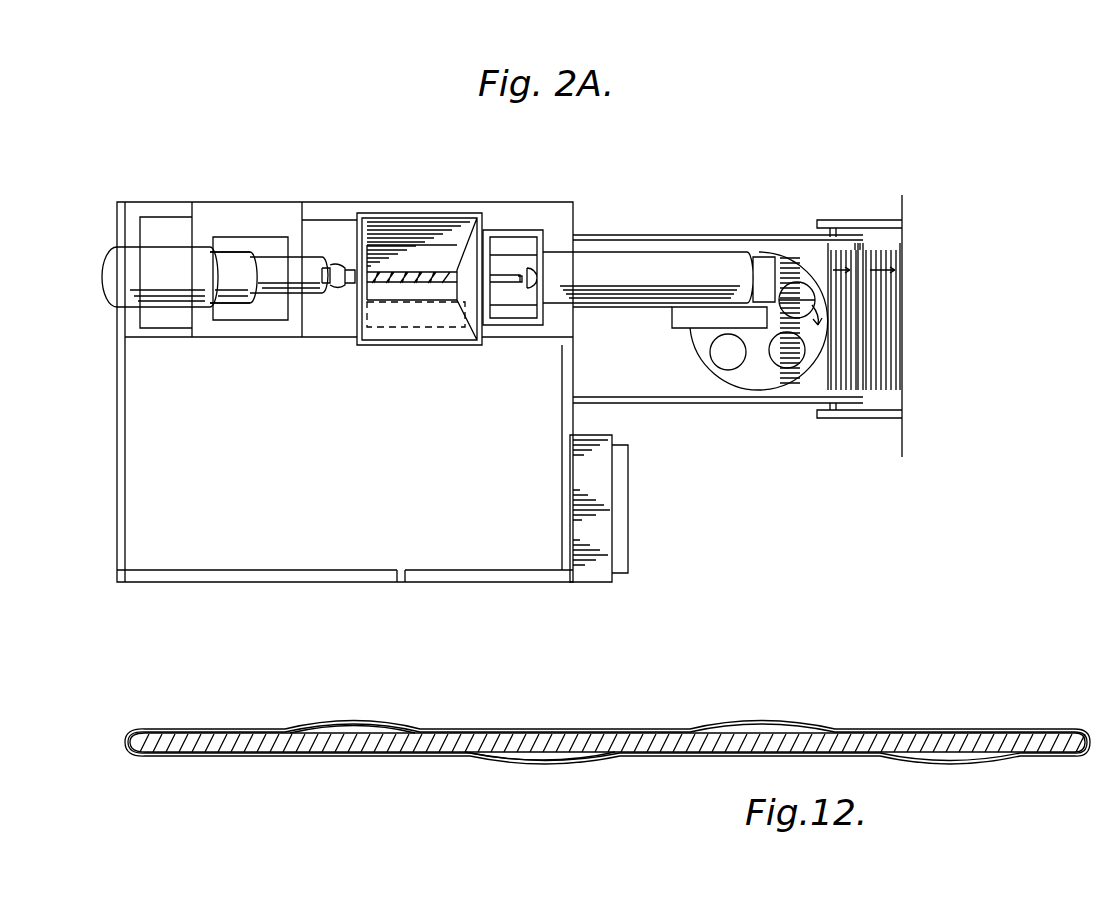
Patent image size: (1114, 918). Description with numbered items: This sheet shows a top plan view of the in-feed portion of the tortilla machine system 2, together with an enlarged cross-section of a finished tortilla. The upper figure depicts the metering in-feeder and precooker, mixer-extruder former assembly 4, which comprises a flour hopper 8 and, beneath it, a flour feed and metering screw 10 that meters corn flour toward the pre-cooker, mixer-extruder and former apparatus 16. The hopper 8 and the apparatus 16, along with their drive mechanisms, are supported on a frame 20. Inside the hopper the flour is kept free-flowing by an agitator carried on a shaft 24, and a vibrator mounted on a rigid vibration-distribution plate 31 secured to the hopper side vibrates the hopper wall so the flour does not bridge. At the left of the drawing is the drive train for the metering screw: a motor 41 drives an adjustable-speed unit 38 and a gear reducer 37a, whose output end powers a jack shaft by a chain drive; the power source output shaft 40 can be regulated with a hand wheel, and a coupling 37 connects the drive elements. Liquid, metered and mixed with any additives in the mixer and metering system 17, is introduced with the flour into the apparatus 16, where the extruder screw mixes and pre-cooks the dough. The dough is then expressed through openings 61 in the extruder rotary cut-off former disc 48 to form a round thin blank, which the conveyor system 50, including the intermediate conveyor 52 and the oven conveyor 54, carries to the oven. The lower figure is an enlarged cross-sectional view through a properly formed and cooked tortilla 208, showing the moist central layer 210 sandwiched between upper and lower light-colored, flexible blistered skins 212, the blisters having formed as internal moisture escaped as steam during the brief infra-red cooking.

In FIG. 2A, the tortilla machine system 2 is at (836, 105).
In FIG. 2A, the mixer-extruder former assembly 4 is at (372, 485).
In FIG. 2A, the flour hopper 8 is at (408, 220).
In FIG. 2A, the flour feed and metering screw 10 is at (420, 284).
In FIG. 2A, the pre-cooker, mixer-extruder and former apparatus 16 is at (618, 275).
In FIG. 2A, the mixer and metering system 17 is at (605, 540).
In FIG. 2A, the frame 20 is at (585, 432).
In FIG. 2A, the agitator shaft 24 is at (512, 262).
In FIG. 2A, the vibration-distribution plate 31 is at (383, 327).
In FIG. 2A, the coupling 37 is at (340, 292).
In FIG. 2A, the gear reducer 37a is at (263, 262).
In FIG. 2A, the adjustable-speed unit 38 is at (235, 296).
In FIG. 2A, the power source output shaft 40 is at (318, 265).
In FIG. 2A, the motor 41 is at (160, 250).
In FIG. 2A, the extruder rotary cut-off former disc 48 is at (700, 340).
In FIG. 2A, the conveyor system 50 is at (807, 416).
In FIG. 2A, the intermediate conveyor 52 is at (800, 250).
In FIG. 2A, the oven conveyor 54 is at (885, 418).
In FIG. 2A, the openings 61 is at (785, 368).
In FIG. 12, the laminated strip 208 is at (781, 697).
In FIG. 12, the core layer 210 is at (636, 733).
In FIG. 12, the cover layer bulges 212 is at (520, 762).